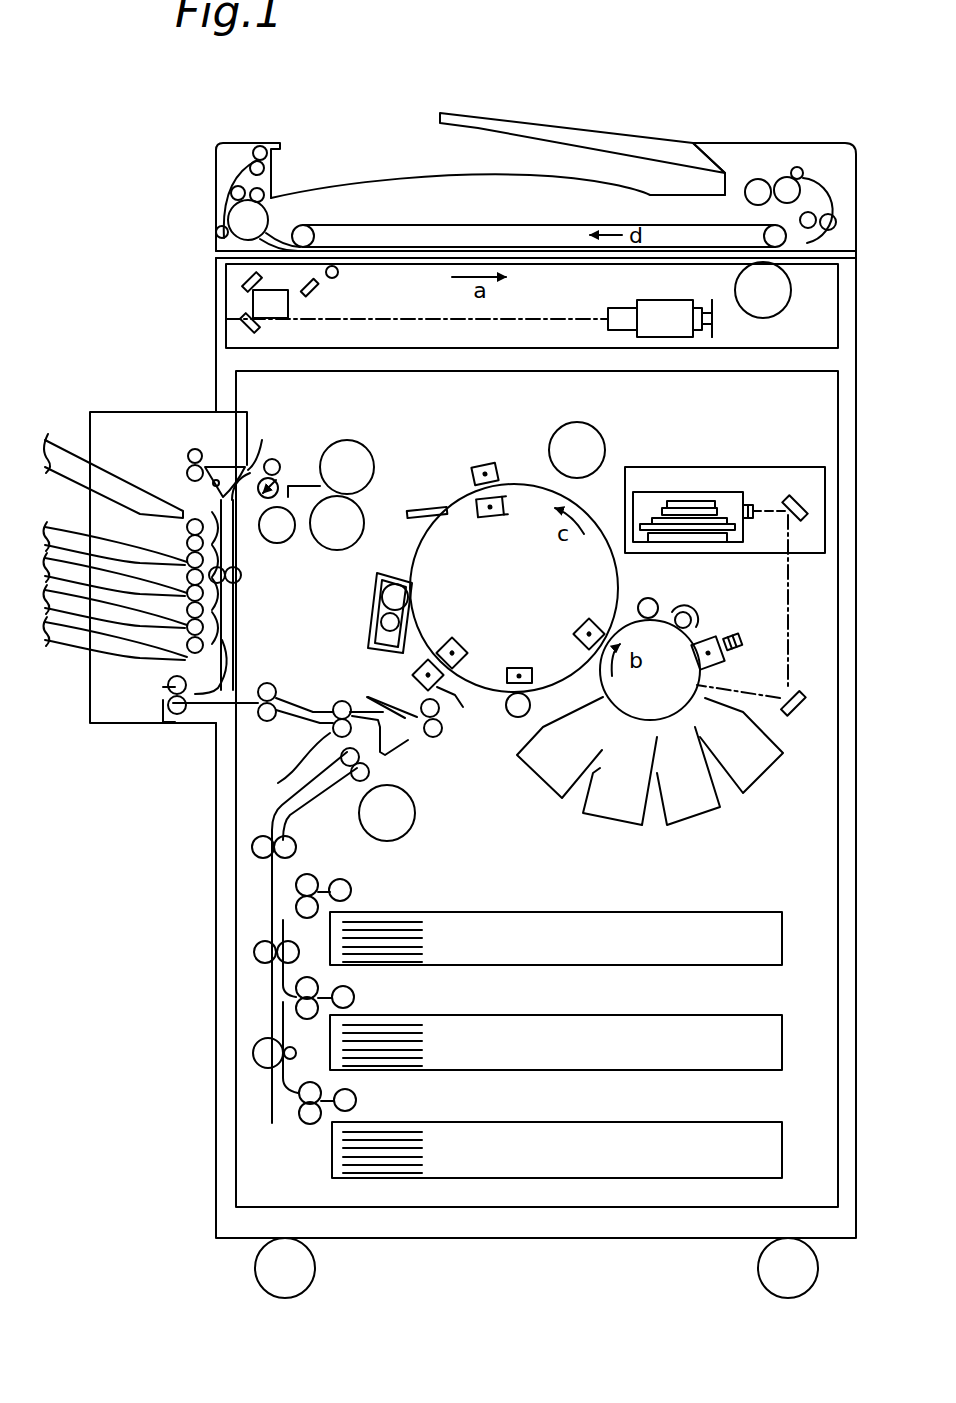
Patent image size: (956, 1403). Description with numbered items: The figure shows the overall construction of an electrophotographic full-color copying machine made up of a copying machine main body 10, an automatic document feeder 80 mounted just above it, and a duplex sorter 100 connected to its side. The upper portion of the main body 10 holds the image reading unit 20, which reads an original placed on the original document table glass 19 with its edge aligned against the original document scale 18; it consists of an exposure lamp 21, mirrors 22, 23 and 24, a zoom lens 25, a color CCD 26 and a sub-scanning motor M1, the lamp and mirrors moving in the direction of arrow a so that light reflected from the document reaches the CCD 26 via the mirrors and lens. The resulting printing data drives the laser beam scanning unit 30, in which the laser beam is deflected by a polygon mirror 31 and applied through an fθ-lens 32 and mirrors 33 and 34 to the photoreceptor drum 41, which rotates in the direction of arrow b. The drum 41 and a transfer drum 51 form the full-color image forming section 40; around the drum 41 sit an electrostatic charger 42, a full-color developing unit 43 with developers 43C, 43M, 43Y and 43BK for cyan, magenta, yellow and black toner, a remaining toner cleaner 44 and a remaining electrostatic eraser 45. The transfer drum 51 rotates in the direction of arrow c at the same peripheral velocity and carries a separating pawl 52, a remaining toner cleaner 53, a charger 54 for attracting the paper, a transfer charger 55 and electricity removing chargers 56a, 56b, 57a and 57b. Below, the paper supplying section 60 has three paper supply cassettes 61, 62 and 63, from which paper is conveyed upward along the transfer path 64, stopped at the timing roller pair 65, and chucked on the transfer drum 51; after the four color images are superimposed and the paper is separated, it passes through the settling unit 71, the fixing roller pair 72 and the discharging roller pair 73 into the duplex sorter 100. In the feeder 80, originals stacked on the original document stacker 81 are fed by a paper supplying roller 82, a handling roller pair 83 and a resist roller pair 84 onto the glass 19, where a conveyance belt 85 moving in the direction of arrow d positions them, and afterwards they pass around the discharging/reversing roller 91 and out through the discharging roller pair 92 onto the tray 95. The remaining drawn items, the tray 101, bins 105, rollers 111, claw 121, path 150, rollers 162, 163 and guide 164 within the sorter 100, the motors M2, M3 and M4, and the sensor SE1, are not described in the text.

The copying machine main body 10 is at (530, 405).
The original document scale 18 is at (283, 260).
The original document table glass 19 is at (528, 236).
The image reading unit 20 is at (457, 332).
The exposure lamp 21 is at (345, 277).
The mirror 22 is at (318, 293).
The mirror 23 is at (245, 278).
The mirror 24 is at (243, 323).
The zoom lens 25 is at (652, 300).
The color CCD 26 is at (714, 318).
The laser beam scanning unit 30 is at (684, 465).
The polygon mirror 31 is at (708, 500).
The fθ-lens 32 is at (750, 504).
The mirror 33 is at (800, 496).
The mirror 34 is at (805, 709).
The full-color image forming section 40 is at (392, 668).
The photoreceptor drum 41 is at (630, 719).
The electrostatic charger 42 is at (722, 636).
The full-color developing unit 43 is at (709, 822).
The developer 43BK is at (538, 772).
The developer 43Y is at (600, 819).
The developer 43M is at (682, 826).
The developer 43C is at (758, 783).
The remaining toner cleaner 44 is at (652, 599).
The remaining electrostatic eraser 45 is at (692, 615).
The transfer drum 51 is at (522, 485).
The separating pawl 52 is at (418, 505).
The remaining toner cleaner 53 is at (370, 620).
The charger 54 is at (520, 668).
The transfer charger 55 is at (576, 620).
The electricity removing charger 56a is at (493, 517).
The electricity removing charger 56b is at (478, 464).
The electricity removing charger 57a is at (460, 639).
The electricity removing charger 57b is at (440, 690).
The paper supplying section 60 is at (483, 910).
The paper supply cassette 61 is at (512, 966).
The paper supply cassette 62 is at (520, 1071).
The paper supply cassette 63 is at (535, 1179).
The transfer path 64 is at (272, 1002).
The timing roller pair 65 is at (433, 738).
The settling unit 71 is at (340, 553).
The fixing roller pair 72 is at (372, 446).
The discharging roller pair 73 is at (267, 458).
The automatic document feeder 80 is at (314, 150).
The original document stacker 81 is at (597, 149).
The paper supplying roller 82 is at (757, 179).
The handling roller pair 83 is at (790, 178).
The resist roller pair 84 is at (836, 224).
The conveyance belt 85 is at (450, 222).
The original document discharging/reversing roller 91 is at (228, 220).
The discharging roller pair 92 is at (258, 146).
The tray 95 is at (384, 176).
The duplex sorter 100 is at (83, 346).
The non-sort tray 101 is at (60, 437).
The sort bins 105 is at (62, 660).
The discharge rollers 111 is at (187, 470).
The switching claw 121 is at (233, 466).
The transport path 150 is at (233, 621).
The transport rollers 162 is at (178, 715).
The transport rollers 163 is at (267, 722).
The transport guide 164 is at (299, 786).
The sub-scanning motor M1 is at (735, 290).
The transfer drum motor M2 is at (583, 423).
The feed motor M3 is at (385, 842).
The fixing motor M4 is at (277, 544).
The paper sensor SE1 is at (275, 485).